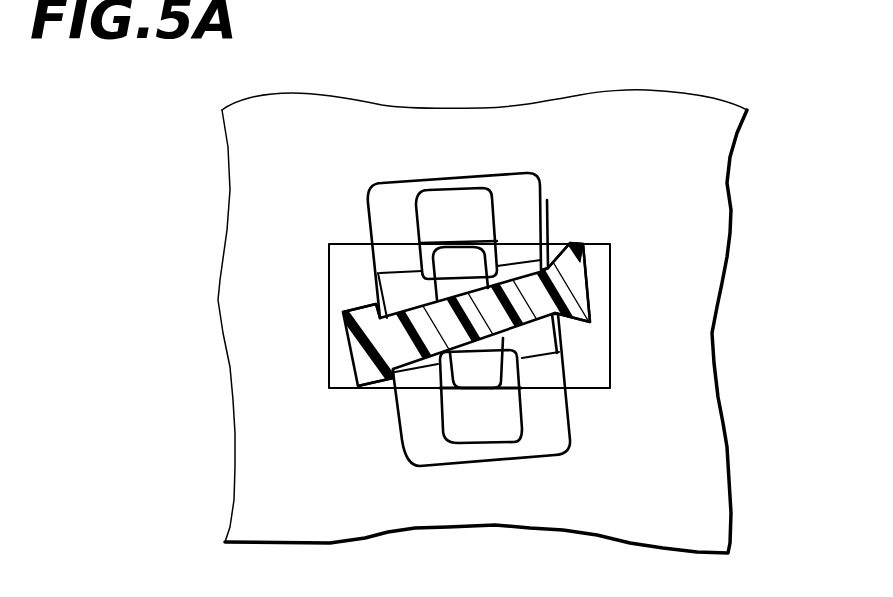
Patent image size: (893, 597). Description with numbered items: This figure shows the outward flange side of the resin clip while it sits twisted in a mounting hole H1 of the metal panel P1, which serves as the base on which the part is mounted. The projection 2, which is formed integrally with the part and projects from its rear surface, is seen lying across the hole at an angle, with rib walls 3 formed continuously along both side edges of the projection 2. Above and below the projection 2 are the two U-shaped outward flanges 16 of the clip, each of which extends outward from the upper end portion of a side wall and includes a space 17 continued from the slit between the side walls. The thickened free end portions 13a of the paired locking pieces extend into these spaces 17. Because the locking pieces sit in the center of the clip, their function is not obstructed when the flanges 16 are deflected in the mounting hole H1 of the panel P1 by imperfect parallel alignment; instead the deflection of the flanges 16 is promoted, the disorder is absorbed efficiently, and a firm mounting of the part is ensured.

The projection 2 is at (398, 347).
The rib walls 3 is at (357, 316).
The extended free end portions 13a is at (458, 250).
The outward flanges 16 is at (408, 187).
The spaces 17 is at (453, 200).
The mounting hole H1 is at (587, 358).
The metal panel P1 is at (673, 448).